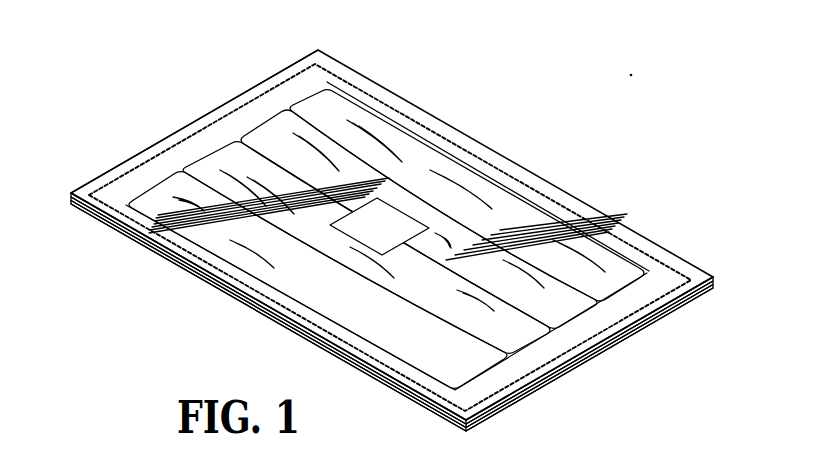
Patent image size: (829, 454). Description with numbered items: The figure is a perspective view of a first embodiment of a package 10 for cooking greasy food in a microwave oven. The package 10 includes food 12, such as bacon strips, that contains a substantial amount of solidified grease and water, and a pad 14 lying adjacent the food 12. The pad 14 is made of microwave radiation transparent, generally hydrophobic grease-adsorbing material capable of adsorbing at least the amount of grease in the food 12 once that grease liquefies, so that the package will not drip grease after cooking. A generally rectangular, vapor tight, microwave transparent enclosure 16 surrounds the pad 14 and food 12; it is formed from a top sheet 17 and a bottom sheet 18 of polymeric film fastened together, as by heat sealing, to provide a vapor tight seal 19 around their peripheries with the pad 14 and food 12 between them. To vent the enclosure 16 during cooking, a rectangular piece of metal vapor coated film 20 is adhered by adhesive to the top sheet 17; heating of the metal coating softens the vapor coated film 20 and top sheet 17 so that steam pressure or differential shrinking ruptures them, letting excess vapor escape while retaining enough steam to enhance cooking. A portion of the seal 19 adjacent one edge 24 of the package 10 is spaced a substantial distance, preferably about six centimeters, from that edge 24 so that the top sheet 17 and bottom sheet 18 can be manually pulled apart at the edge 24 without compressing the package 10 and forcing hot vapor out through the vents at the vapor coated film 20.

The package 10 is at (507, 150).
The food 12 is at (267, 133).
The pad 14 is at (400, 360).
The enclosure 16 is at (205, 277).
The top sheet 17 is at (105, 176).
The bottom sheet 18 is at (118, 228).
The vapor tight seal 19 is at (301, 60).
The vapor coated film 20 is at (390, 236).
The edge 24 is at (603, 345).